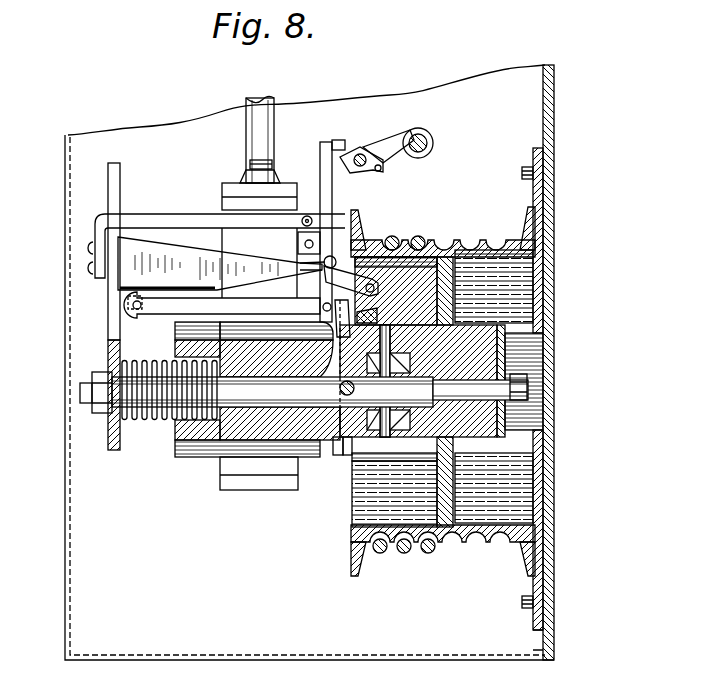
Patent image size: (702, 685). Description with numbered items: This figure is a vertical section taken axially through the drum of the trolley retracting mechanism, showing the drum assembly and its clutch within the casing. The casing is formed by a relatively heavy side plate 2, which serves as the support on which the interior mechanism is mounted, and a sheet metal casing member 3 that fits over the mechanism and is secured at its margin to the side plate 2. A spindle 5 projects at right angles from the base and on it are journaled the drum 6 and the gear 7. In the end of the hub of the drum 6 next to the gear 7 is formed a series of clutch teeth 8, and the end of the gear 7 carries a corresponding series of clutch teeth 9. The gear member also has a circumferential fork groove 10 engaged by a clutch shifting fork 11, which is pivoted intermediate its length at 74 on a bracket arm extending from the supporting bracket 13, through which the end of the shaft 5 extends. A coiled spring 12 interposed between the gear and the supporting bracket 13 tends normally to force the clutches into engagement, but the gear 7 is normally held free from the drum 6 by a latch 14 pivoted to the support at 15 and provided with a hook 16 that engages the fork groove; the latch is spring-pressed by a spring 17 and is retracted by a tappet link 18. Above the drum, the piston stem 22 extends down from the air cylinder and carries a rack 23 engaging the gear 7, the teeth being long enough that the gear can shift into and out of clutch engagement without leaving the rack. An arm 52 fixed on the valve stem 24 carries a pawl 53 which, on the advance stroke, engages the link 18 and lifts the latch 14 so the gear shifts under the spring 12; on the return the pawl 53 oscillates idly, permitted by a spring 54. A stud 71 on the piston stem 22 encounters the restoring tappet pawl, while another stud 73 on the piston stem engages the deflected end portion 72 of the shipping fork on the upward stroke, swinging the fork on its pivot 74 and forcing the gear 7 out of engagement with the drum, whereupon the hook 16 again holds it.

The side plate 2 is at (548, 112).
The casing member 3 is at (65, 307).
The spindle 5 is at (247, 393).
The drum 6 is at (430, 240).
The gear 7 is at (333, 455).
The clutch teeth 8 is at (407, 455).
The clutch teeth 9 is at (382, 460).
The fork groove 10 is at (345, 452).
The clutch shifting fork 11 is at (384, 336).
The coiled spring 12 is at (157, 420).
The supporting bracket 13 is at (110, 430).
The latch 14 is at (183, 304).
The pivot 15 is at (133, 304).
The hook 16 is at (325, 308).
The spring 17 is at (184, 268).
The tappet link 18 is at (320, 173).
The piston stem 22 is at (246, 137).
The rack 23 is at (222, 194).
The valve stem 24 is at (430, 136).
The arm 52 is at (397, 153).
The pawl 53 is at (372, 173).
The spring 54 is at (373, 150).
The stud 71 is at (250, 166).
The end portion of shipping fork 72 is at (325, 264).
The stud 73 is at (318, 246).
The pivot 74 is at (378, 312).